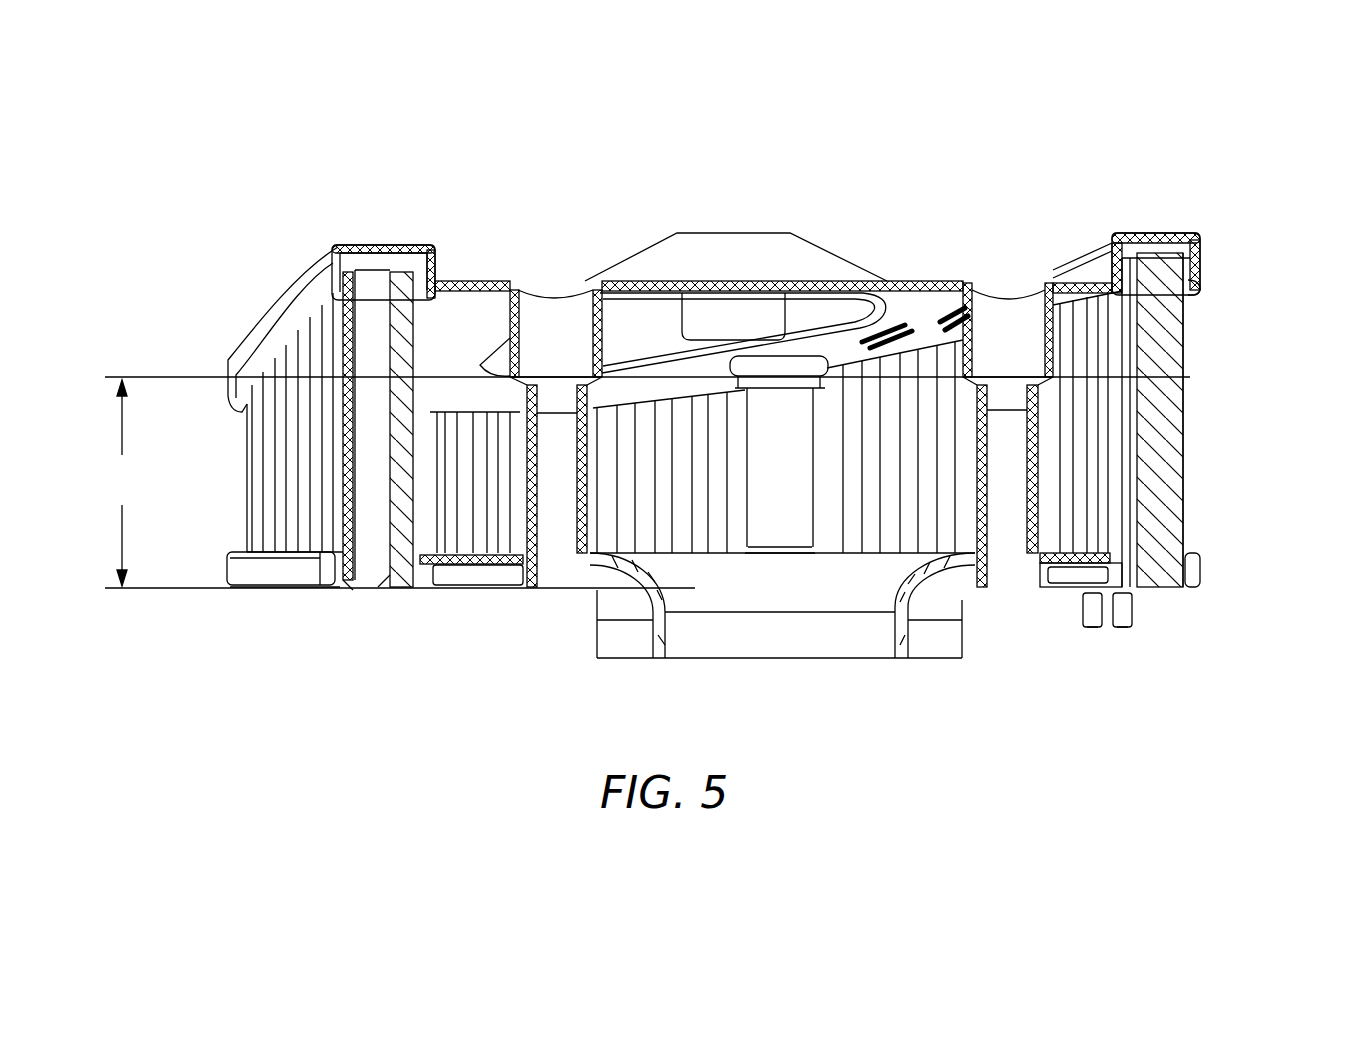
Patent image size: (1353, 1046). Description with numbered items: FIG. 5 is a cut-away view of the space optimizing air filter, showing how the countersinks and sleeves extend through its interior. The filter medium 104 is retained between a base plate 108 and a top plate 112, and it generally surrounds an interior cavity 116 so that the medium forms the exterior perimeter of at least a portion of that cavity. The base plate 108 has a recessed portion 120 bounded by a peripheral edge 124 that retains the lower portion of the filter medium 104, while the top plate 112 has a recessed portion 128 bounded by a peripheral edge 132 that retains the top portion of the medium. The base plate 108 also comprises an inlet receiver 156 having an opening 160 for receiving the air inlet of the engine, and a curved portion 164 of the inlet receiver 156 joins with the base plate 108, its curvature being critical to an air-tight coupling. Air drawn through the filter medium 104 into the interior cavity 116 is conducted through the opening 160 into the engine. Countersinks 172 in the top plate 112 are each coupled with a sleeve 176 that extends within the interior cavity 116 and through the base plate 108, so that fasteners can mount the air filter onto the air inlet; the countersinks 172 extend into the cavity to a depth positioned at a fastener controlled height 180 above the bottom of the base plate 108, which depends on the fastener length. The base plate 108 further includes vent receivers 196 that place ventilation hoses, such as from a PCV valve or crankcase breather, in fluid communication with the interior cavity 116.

The filter medium 104 is at (252, 447).
The base plate 108 is at (283, 590).
The top plate 112 is at (281, 292).
The interior cavity 116 is at (1098, 447).
The recessed portion 120 is at (380, 590).
The peripheral edge 124 is at (227, 558).
The recessed portion 128 is at (385, 256).
The peripheral edge 132 is at (1200, 272).
The inlet receiver 156 is at (625, 660).
The opening 160 is at (723, 578).
The curved portion 164 is at (960, 595).
The countersink 172 is at (1006, 410).
The sleeve 176 is at (555, 568).
The fastener controlled height 180 is at (646, 482).
The vent receiver 196 is at (1092, 635).